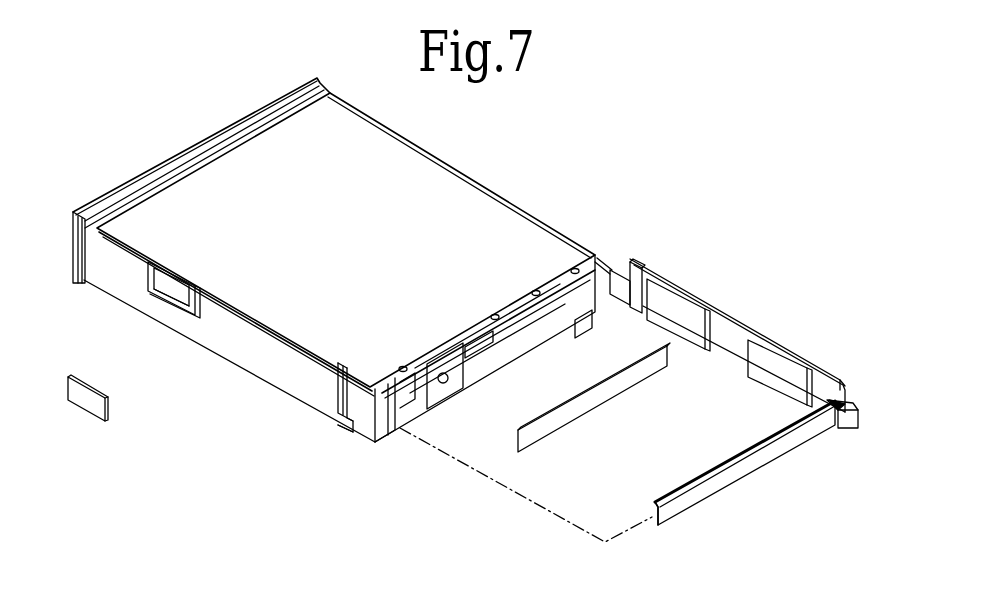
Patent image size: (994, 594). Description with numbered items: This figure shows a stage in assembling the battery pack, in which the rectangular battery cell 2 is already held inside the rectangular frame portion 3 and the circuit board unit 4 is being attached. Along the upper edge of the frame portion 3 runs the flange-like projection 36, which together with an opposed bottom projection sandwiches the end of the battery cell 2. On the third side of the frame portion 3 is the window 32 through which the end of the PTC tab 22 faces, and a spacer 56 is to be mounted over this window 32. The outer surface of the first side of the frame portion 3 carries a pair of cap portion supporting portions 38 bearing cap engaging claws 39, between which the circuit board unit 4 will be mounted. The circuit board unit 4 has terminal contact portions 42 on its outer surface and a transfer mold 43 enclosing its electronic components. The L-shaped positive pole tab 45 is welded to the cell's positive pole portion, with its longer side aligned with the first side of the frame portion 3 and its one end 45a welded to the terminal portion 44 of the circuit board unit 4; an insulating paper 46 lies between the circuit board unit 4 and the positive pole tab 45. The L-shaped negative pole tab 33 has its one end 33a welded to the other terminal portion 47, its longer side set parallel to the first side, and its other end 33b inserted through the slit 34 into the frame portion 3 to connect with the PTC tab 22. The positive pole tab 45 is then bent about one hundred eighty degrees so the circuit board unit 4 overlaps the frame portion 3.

The battery cell 2 is at (415, 172).
The frame portion 3 is at (300, 405).
The circuit board unit 4 is at (737, 319).
The PTC tab 22 is at (170, 287).
The window 32 is at (148, 337).
The negative pole tab 33 is at (776, 462).
The one end of negative pole tab 33a is at (838, 428).
The other end of negative pole tab 33b is at (680, 515).
The slit 34 is at (337, 398).
The flange-like projection 36 is at (207, 157).
The cap portion supporting portion 38 is at (446, 345).
The cap engaging claw 39 is at (536, 290).
The terminal contact portion 42 is at (703, 292).
The transfer mold 43 is at (678, 318).
The terminal portion 44 is at (640, 262).
The positive pole tab 45 is at (575, 232).
The one end of positive pole tab 45a is at (614, 278).
The insulating paper 46 is at (620, 395).
The other terminal portion 47 is at (857, 402).
The spacer 56 is at (88, 412).